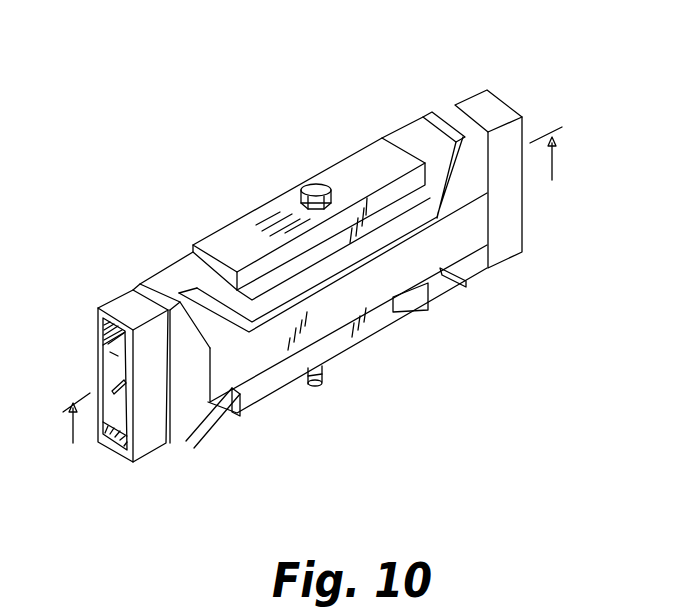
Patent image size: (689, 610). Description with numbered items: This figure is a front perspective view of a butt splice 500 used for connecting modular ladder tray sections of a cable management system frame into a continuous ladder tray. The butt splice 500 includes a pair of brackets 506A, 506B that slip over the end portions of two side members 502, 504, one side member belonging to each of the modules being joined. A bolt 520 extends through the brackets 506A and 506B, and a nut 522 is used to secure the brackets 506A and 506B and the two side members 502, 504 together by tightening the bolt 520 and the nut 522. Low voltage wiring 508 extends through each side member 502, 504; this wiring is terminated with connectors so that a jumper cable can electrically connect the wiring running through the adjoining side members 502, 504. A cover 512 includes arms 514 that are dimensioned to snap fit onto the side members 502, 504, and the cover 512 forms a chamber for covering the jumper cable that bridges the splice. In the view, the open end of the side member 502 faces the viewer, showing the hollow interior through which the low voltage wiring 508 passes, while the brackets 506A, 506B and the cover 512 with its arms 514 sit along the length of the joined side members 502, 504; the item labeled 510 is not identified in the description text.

The butt splice 500 is at (163, 143).
The side member 502 is at (117, 302).
The side member 504 is at (492, 114).
The bracket 506A is at (360, 165).
The bracket 506B is at (260, 387).
The low voltage wiring 508 is at (120, 386).
The opening 510 is at (117, 352).
The cover 512 is at (372, 283).
The arms 514 is at (152, 281).
The bolt 520 is at (314, 184).
The nut 522 is at (322, 379).